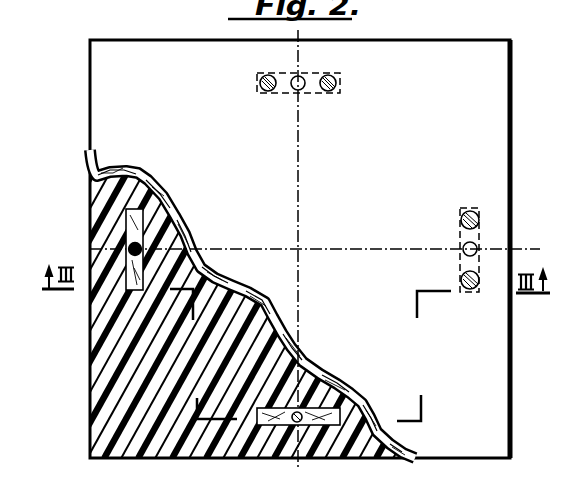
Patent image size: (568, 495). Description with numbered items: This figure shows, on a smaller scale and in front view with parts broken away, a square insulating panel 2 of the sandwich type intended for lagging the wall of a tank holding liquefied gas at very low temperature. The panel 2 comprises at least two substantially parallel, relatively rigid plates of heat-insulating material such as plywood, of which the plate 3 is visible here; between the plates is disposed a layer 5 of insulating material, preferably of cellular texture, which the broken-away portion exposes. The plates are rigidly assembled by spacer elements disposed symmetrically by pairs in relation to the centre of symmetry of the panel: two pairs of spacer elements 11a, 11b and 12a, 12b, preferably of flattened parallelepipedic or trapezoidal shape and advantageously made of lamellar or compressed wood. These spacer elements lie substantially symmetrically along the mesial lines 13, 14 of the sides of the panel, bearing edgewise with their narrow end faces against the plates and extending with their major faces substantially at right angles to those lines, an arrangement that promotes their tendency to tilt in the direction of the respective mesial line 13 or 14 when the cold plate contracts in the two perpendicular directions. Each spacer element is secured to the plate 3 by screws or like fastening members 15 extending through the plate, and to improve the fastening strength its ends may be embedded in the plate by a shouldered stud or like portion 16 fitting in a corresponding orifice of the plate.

The insulating panel 2 is at (84, 113).
The plate 3 is at (463, 48).
The layer of insulating material 5 is at (97, 366).
The spacer element 11a is at (281, 96).
The spacer element 11b is at (325, 406).
The spacer element 12a is at (126, 231).
The spacer element 12b is at (458, 243).
The mesial line 13 is at (296, 221).
The mesial line 14 is at (354, 248).
The screws or like fastening members 15 is at (339, 88).
The shouldered stud 16 is at (300, 77).